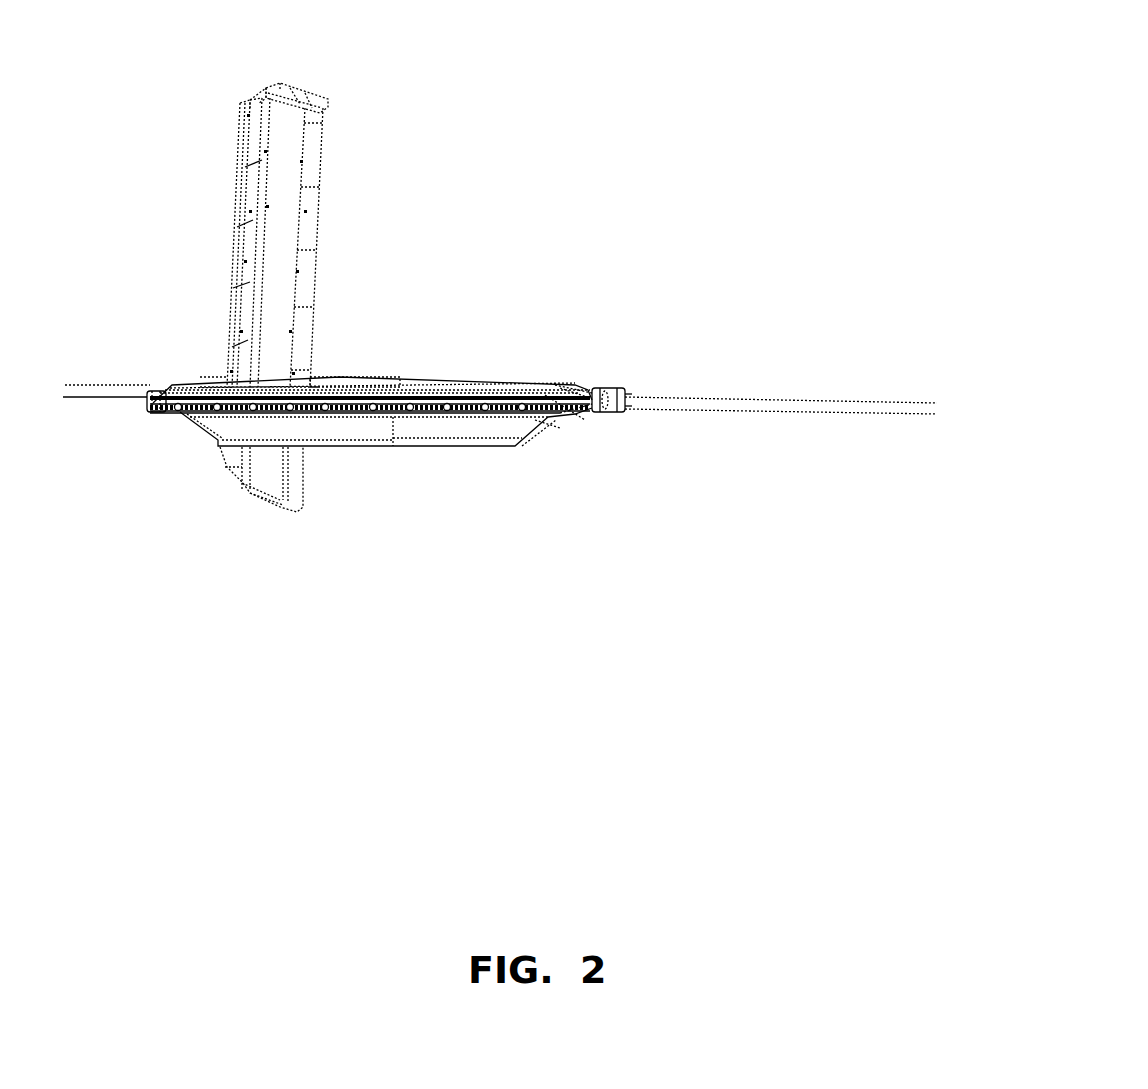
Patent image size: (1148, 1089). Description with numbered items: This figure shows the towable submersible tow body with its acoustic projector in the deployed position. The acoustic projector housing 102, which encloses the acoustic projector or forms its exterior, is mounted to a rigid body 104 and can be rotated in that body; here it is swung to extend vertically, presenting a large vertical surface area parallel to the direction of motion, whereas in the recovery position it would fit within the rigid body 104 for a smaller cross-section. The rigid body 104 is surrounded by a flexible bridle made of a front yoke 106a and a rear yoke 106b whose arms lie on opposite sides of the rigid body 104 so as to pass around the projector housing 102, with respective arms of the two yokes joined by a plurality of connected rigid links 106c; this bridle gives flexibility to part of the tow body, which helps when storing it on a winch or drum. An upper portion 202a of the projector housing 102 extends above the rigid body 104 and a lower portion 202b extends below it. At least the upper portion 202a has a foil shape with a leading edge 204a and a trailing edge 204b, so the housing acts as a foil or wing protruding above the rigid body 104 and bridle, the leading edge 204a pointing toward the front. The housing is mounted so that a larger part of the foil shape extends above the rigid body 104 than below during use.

The acoustic projector housing 102 is at (310, 218).
The rigid body 104 is at (448, 445).
The front yoke 106a is at (605, 388).
The rear yoke 106b is at (160, 392).
The rigid links 106c is at (373, 412).
The upper portion 202a is at (218, 375).
The lower portion 202b is at (218, 447).
The leading edge 204a is at (320, 102).
The trailing edge 204b is at (251, 102).